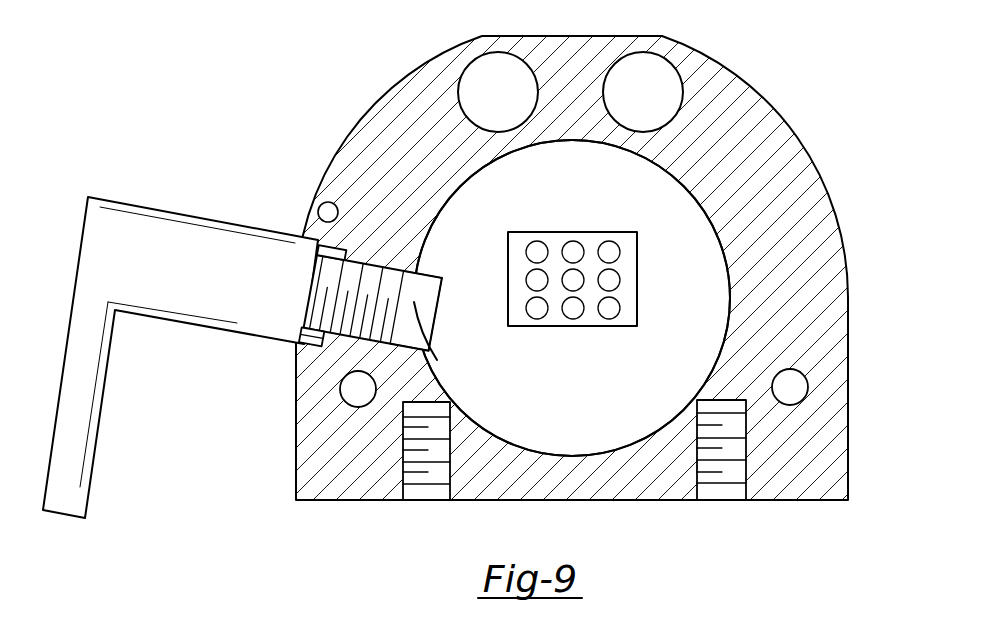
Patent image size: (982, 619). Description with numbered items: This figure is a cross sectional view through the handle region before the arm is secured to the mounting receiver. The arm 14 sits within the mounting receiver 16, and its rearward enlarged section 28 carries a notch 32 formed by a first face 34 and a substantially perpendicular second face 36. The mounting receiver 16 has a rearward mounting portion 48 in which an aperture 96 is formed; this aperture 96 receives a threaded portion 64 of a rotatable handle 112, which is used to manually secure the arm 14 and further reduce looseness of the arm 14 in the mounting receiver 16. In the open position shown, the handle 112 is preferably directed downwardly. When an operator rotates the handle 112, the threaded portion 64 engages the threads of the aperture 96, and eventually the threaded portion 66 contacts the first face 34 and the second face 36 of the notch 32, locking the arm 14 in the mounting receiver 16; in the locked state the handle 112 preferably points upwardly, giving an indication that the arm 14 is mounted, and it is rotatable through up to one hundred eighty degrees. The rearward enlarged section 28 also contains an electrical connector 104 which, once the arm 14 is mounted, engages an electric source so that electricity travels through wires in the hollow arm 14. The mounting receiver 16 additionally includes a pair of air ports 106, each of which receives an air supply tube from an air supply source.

The arm 14 is at (693, 245).
The mounting receiver 16 is at (742, 97).
The rearward enlarged section 28 is at (718, 300).
The notch 32 is at (423, 353).
The first face 34 is at (436, 327).
The second face 36 is at (436, 272).
The rearward mounting portion 48 is at (827, 408).
The threaded portion 64 is at (380, 273).
The threaded portion 66 is at (310, 352).
The aperture 96 is at (302, 233).
The electrical connector 104 is at (572, 328).
The air ports 106 is at (493, 72).
The rotatable handle 112 is at (100, 288).